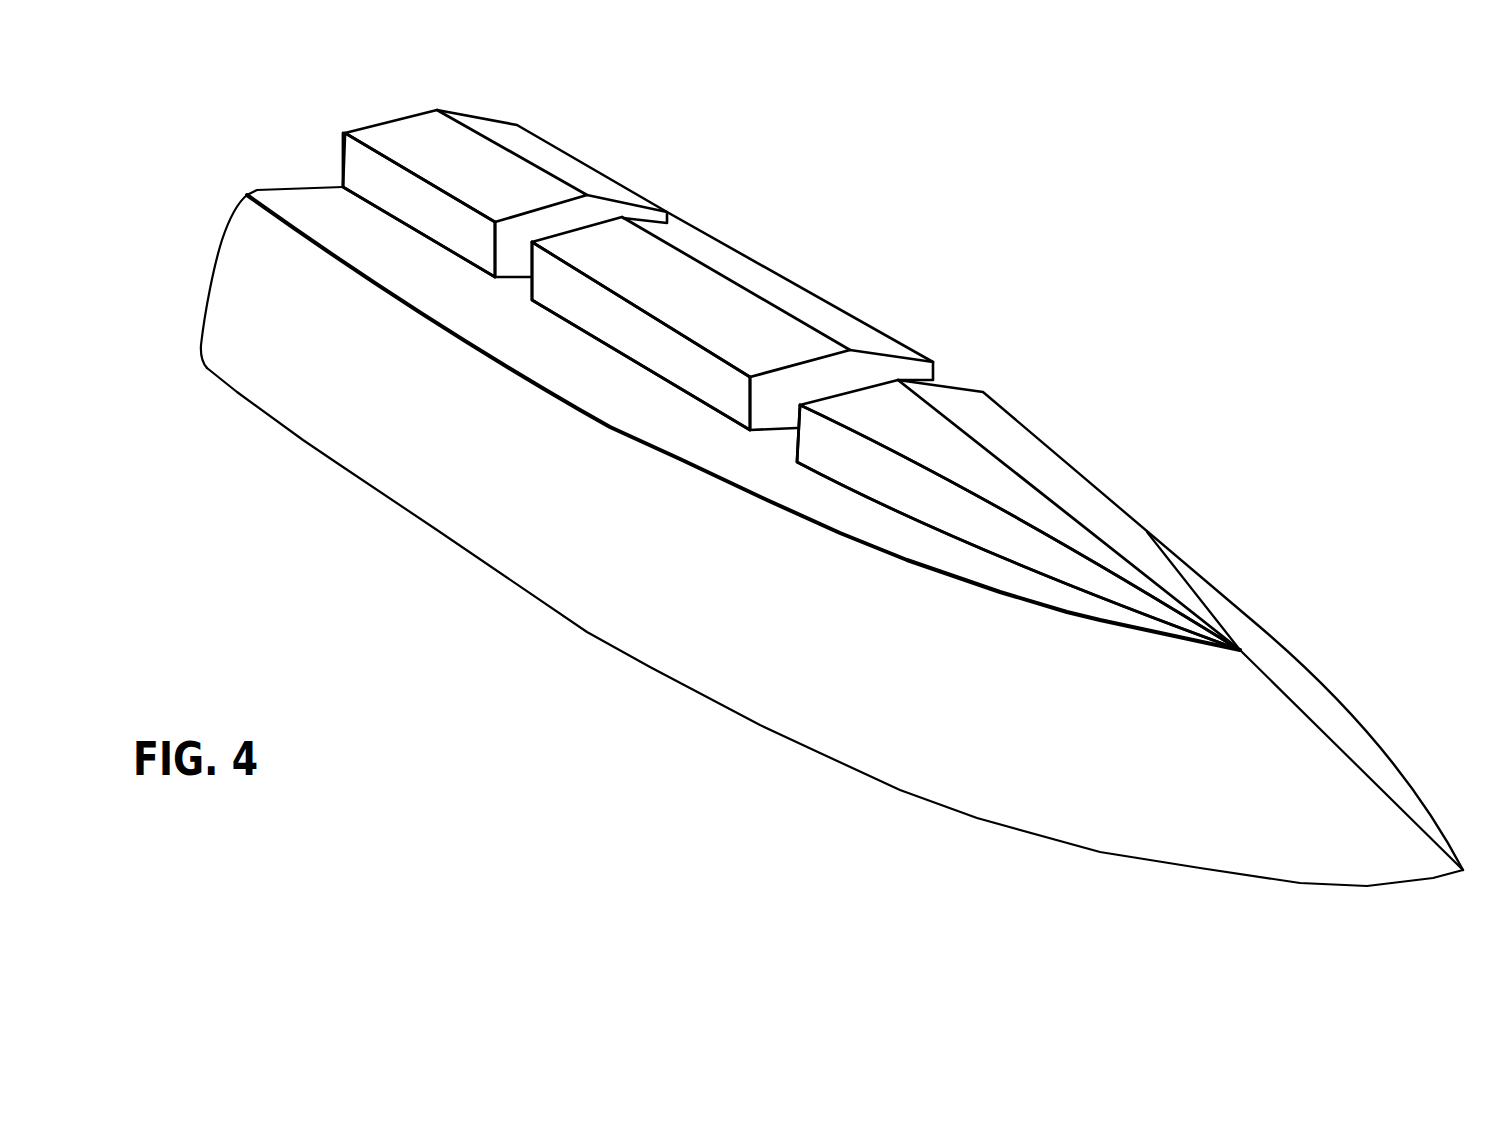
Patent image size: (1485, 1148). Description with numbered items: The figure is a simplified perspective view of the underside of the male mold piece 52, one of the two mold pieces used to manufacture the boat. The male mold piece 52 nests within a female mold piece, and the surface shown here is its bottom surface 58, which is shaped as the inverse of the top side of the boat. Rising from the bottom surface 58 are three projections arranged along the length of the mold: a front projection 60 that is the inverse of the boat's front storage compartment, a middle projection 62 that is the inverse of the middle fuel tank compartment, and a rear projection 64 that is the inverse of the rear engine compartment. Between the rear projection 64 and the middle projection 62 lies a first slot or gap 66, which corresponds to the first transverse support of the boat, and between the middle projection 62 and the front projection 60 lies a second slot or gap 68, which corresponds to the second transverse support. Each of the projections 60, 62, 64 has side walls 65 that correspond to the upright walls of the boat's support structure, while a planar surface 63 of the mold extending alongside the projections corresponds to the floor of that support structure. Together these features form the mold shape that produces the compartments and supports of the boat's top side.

The male mold piece 52 is at (233, 392).
The bottom surface 58 is at (708, 262).
The front projection 60 is at (1047, 448).
The middle projection 62 is at (880, 340).
The planar surface 63 is at (785, 490).
The rear projection 64 is at (538, 155).
The side walls 65 is at (360, 162).
The first slot or gap 66 is at (508, 263).
The second slot or gap 68 is at (777, 403).